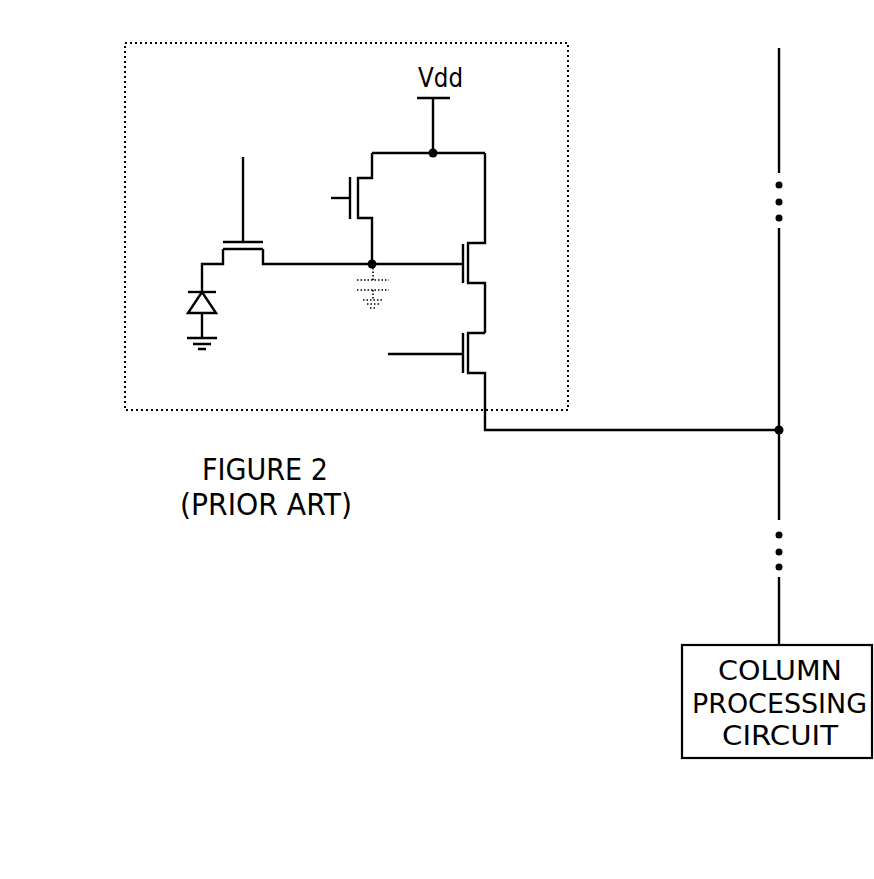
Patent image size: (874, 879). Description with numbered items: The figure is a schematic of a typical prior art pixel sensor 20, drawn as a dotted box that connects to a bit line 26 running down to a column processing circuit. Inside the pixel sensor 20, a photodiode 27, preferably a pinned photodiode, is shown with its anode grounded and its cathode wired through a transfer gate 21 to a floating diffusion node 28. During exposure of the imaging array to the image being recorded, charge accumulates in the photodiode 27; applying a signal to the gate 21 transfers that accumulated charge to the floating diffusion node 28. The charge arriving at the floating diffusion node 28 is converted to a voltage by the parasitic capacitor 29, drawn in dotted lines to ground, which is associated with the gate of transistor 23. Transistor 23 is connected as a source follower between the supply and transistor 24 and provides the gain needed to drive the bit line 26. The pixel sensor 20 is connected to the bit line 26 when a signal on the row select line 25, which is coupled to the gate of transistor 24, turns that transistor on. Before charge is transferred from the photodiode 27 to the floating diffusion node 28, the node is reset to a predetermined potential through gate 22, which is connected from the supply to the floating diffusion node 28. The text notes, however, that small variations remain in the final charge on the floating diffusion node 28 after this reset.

The pixel sensor 20 is at (569, 224).
The gate 21 is at (233, 242).
The gate 22 is at (352, 186).
The transistor 23 is at (470, 243).
The transistor 24 is at (481, 372).
The row select line 25 is at (396, 354).
The bit line 26 is at (781, 363).
The photodiode 27 is at (205, 292).
The floating diffusion node 28 is at (370, 263).
The parasitic capacitor 29 is at (360, 290).